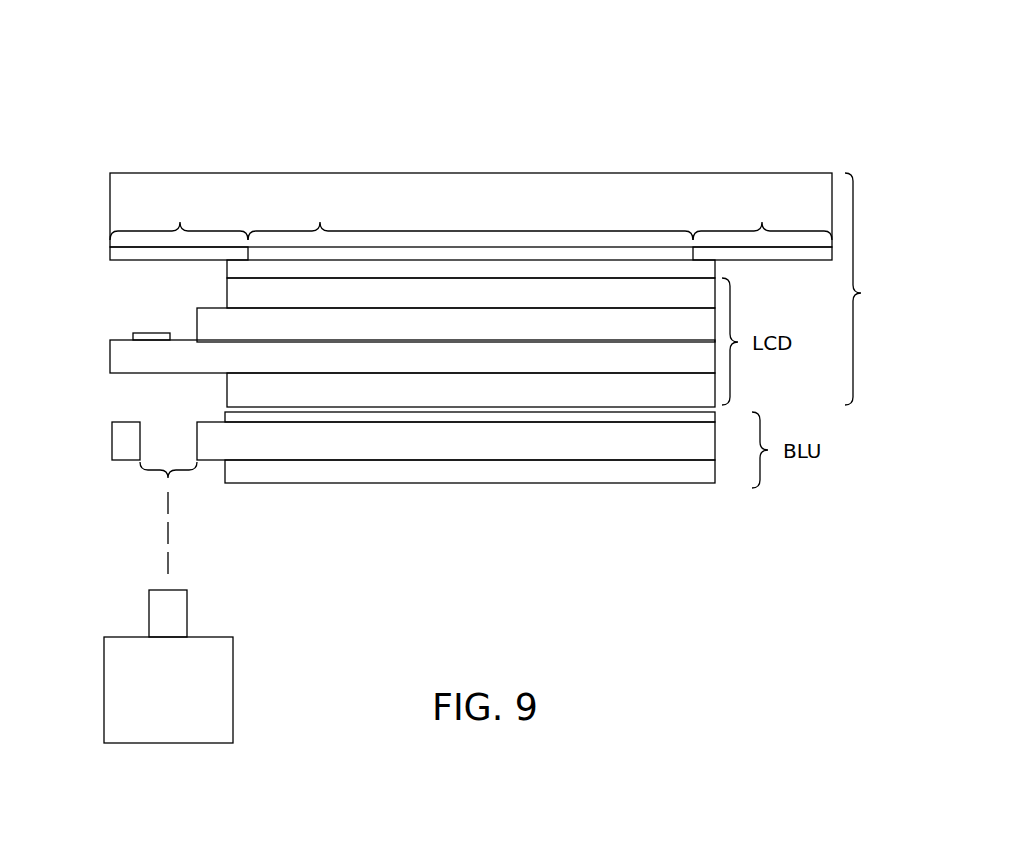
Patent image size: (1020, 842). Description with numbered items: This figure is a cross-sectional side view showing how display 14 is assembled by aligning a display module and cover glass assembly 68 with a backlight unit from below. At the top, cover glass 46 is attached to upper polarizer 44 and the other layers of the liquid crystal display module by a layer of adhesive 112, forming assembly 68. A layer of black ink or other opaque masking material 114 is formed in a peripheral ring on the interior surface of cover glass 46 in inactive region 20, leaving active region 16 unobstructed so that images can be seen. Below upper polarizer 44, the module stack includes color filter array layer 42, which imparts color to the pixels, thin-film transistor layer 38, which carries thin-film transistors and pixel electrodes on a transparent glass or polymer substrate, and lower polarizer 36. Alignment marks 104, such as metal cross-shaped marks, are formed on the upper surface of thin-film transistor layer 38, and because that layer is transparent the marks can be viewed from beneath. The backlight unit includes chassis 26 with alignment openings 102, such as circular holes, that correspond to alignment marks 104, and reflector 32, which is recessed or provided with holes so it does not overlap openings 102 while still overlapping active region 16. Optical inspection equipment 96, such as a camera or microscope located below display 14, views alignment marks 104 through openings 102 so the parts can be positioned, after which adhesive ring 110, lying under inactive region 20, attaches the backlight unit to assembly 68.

The display 14 is at (786, 61).
The cover glass 46 is at (260, 190).
The inactive region 20 is at (471, 219).
The active region 16 is at (470, 219).
The opaque masking material 114 is at (110, 253).
The adhesive 112 is at (560, 260).
The upper polarizer 44 is at (232, 293).
The color filter array layer 42 is at (207, 318).
The alignment marks 104 is at (138, 328).
The thin-film transistor layer 38 is at (118, 357).
The lower polarizer 36 is at (232, 388).
The assembly 68 is at (871, 289).
The adhesive ring 110 is at (715, 417).
The chassis 26 is at (118, 443).
The reflector 32 is at (632, 476).
The alignment openings 102 is at (168, 478).
The optical inspection equipment 96 is at (233, 675).